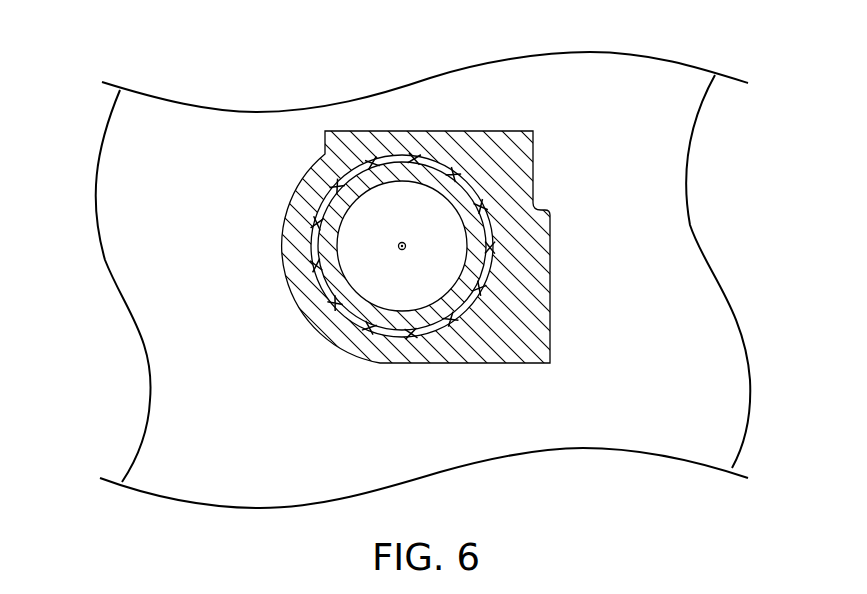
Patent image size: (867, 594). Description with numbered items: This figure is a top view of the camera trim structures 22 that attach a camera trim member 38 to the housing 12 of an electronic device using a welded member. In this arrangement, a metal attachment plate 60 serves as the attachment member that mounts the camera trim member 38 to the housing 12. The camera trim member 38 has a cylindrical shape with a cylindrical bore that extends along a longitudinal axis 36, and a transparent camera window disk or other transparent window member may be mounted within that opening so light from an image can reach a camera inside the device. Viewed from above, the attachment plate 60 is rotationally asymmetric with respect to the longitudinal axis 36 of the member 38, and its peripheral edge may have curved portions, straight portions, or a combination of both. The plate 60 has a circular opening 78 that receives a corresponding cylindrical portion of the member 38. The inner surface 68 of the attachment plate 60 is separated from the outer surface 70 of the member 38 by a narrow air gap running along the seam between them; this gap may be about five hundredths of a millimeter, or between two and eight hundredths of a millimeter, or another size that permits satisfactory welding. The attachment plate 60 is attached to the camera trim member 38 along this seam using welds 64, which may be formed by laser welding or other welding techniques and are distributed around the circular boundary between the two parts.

The housing 12 is at (622, 60).
The camera trim structures 22 is at (220, 243).
The longitudinal axis 36 is at (406, 250).
The camera trim member 38 is at (353, 308).
The attachment plate 60 is at (527, 183).
The welds 64 is at (485, 292).
The inner surface 68 is at (438, 155).
The outer surface 70 is at (372, 327).
The opening 78 is at (427, 213).